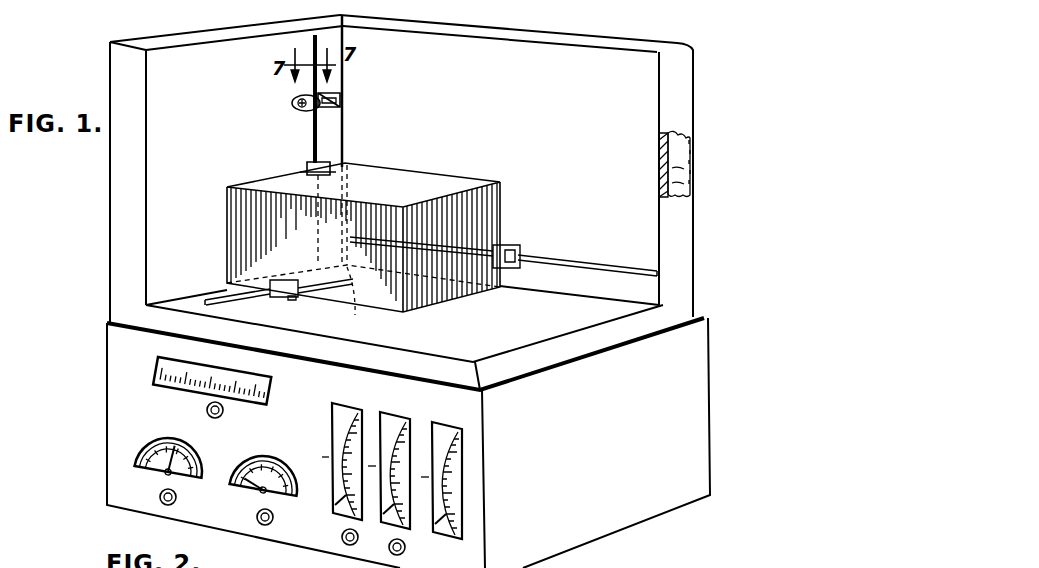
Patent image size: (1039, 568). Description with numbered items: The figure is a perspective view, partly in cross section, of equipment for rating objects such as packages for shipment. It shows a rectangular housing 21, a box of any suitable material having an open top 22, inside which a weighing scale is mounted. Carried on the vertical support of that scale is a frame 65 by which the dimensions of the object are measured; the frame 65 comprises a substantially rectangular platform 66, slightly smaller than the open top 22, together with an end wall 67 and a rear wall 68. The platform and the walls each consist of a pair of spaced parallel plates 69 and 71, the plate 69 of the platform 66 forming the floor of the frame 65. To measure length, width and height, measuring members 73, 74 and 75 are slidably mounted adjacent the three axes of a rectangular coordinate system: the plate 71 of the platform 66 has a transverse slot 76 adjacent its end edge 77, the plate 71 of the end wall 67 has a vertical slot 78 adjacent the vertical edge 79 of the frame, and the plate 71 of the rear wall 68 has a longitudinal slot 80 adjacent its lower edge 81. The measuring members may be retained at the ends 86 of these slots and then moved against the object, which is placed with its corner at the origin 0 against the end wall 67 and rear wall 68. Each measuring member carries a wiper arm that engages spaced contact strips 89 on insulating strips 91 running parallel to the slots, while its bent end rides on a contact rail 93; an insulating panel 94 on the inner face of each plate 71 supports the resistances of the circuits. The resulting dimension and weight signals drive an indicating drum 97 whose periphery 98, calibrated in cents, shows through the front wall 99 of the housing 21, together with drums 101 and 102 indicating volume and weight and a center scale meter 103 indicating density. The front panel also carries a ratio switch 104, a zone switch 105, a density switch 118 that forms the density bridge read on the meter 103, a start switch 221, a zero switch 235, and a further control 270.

The origin 0 is at (356, 301).
The rectangular housing 21 is at (708, 394).
The open top 22 is at (577, 352).
The frame 65 is at (528, 356).
The platform 66 is at (613, 312).
The end wall 67 is at (150, 190).
The rear wall 68 is at (637, 58).
The plate 69 is at (690, 150).
The plate 71 is at (659, 160).
The measuring member 73 is at (514, 246).
The measuring member 74 is at (296, 299).
The measuring member 75 is at (332, 173).
The transverse slot 76 is at (245, 294).
The end edge 77 is at (165, 296).
The vertical slot 78 is at (300, 98).
The vertical edge 79 is at (343, 134).
The longitudinal slot 80 is at (575, 263).
The lower edge 81 is at (560, 296).
The slot ends 86 is at (312, 38).
The contact strips 89 is at (338, 95).
The insulating strips 91 is at (340, 103).
The contact rail 93 is at (298, 108).
The insulating panel 94 is at (670, 176).
The indicating drum 97 is at (445, 533).
The periphery 98 is at (463, 497).
The front wall 99 is at (477, 548).
The indicating drum 101 is at (333, 510).
The indicating drum 102 is at (394, 476).
The electric meter 103 is at (158, 370).
The ratio switch 104 is at (133, 463).
The zone switch 105 is at (240, 493).
The density switch 118 is at (224, 411).
The start switch 221 is at (264, 526).
The zero switch 235 is at (160, 503).
The volume knob 270 is at (347, 544).